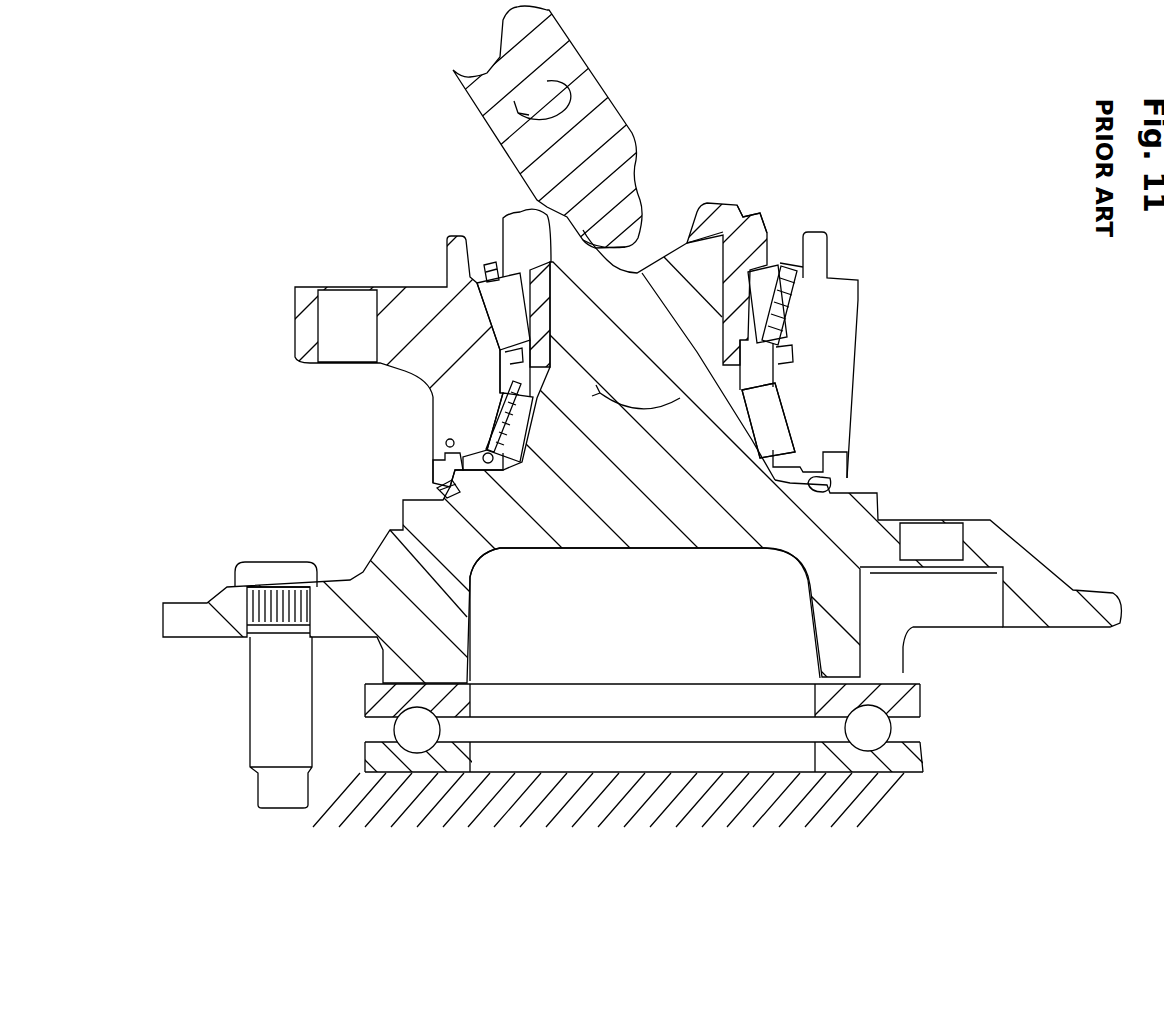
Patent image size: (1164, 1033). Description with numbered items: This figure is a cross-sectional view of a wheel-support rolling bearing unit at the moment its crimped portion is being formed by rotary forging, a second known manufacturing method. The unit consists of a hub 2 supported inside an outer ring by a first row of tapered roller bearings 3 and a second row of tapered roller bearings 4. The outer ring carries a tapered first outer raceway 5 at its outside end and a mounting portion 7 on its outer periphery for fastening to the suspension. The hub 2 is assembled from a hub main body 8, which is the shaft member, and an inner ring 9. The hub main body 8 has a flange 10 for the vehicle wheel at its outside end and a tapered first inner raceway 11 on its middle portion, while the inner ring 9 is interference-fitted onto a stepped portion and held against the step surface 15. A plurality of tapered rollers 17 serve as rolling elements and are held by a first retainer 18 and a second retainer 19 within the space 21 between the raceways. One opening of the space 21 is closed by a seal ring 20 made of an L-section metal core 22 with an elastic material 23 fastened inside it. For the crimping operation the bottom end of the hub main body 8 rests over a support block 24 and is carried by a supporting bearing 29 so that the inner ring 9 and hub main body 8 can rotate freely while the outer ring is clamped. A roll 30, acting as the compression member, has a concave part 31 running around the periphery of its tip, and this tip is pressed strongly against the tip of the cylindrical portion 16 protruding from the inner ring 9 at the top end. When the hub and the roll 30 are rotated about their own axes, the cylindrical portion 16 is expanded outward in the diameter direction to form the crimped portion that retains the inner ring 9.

The hub 2 is at (665, 522).
The first row of tapered roller bearings 3 is at (773, 410).
The second row of tapered roller bearings 4 is at (783, 313).
The first outer raceway 5 is at (480, 447).
The mounting portion 7 is at (307, 328).
The hub main body 8 is at (600, 530).
The inner ring 9 is at (750, 227).
The flange 10 is at (200, 617).
The first inner raceway 11 is at (523, 455).
The step surface 15 is at (541, 362).
The cylindrical portion 16 is at (713, 227).
The tapered rollers 17 is at (493, 422).
The first retainer 18 is at (497, 393).
The second retainer 19 is at (787, 330).
The seal ring 20 is at (458, 488).
The space 21 is at (777, 367).
The metal core 22 is at (850, 480).
The elastic material 23 is at (823, 481).
The support block 24 is at (637, 793).
The supporting bearing 29 is at (873, 723).
The roll 30 is at (597, 117).
The concave part 31 is at (630, 133).